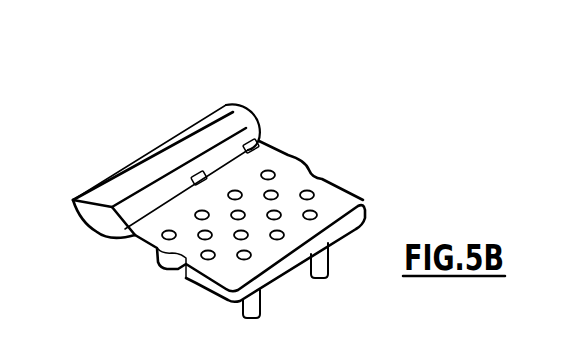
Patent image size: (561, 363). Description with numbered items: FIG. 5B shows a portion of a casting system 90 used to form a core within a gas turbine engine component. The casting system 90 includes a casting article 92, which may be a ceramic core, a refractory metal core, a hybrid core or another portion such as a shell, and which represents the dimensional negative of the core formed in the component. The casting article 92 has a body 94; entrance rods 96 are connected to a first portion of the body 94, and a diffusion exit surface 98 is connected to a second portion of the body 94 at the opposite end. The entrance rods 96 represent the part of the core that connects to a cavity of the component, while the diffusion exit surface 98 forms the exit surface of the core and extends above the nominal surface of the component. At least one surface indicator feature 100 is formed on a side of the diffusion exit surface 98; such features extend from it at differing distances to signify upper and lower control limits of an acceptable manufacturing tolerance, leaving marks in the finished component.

The casting system 90 is at (214, 185).
The casting article 92 is at (289, 92).
The body 94 is at (384, 204).
The entrance rods 96 is at (318, 279).
The diffusion exit surface 98 is at (227, 93).
The surface indicator feature 100 is at (246, 146).